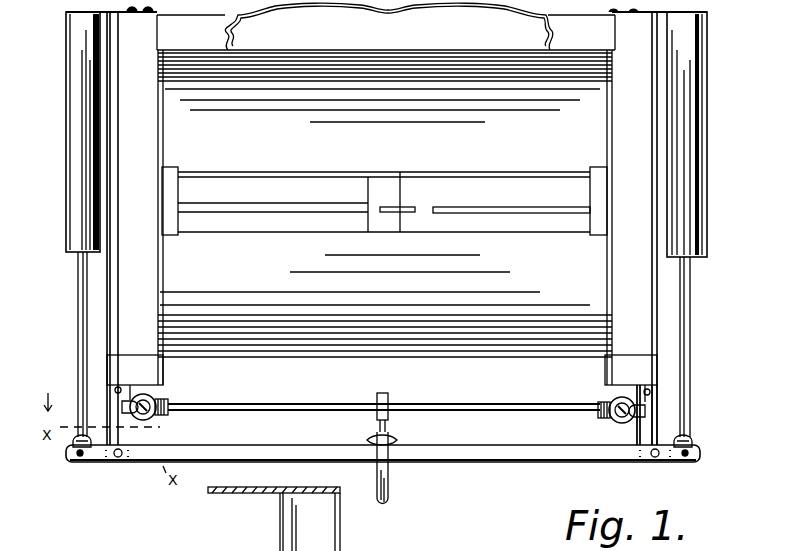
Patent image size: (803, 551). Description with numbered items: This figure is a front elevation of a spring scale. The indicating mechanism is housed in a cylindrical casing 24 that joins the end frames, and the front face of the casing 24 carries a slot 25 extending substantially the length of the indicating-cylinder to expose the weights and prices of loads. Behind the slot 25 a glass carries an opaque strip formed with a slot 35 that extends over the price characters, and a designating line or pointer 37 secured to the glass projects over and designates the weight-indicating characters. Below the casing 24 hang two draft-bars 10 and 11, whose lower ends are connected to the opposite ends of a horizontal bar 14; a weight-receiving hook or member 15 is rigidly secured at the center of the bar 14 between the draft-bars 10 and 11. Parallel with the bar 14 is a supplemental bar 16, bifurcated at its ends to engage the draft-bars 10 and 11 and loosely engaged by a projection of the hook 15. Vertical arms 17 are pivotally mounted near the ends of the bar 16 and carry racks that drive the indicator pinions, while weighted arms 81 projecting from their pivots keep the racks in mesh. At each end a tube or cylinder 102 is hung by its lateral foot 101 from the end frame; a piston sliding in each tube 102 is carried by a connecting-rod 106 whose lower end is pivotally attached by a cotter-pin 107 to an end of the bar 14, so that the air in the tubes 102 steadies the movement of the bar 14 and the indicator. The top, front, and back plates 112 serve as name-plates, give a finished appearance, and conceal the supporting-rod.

The lateral foot 101 is at (157, 13).
The top, front, and back plates 112 is at (572, 20).
The tube or cylinder 102 is at (70, 146).
The connecting-rod 106 is at (80, 366).
The slot 25 is at (335, 180).
The designating line or pointer 37 is at (405, 207).
The slot 35 is at (477, 208).
The cylindrical casing 24 is at (385, 205).
The vertical arms 17 is at (145, 389).
The draft-bar 10 is at (128, 406).
The supplemental bar 16 is at (125, 408).
The weighted arms 81 is at (152, 418).
The horizontal bar 14 is at (275, 456).
The draft-bar 11 is at (650, 420).
The cotter-pins 107 is at (80, 455).
The weight-receiving hook or member 15 is at (390, 498).